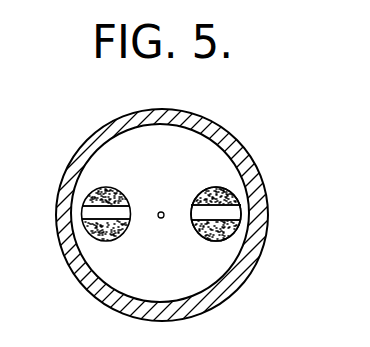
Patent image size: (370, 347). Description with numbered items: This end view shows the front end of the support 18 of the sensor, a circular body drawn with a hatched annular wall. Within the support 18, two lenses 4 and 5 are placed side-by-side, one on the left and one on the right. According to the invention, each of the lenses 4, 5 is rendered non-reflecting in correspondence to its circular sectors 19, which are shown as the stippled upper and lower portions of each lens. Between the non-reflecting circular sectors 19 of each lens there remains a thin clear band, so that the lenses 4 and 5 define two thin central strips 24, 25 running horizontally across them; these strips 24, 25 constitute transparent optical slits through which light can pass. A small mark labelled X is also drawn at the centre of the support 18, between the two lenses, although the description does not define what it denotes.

The support 18 is at (243, 152).
The lens 4 is at (93, 184).
The central strip 24 is at (93, 212).
The central strip 25 is at (231, 214).
The lens 5 is at (232, 186).
The circular sectors 19 is at (113, 188).
The central axis X is at (161, 212).